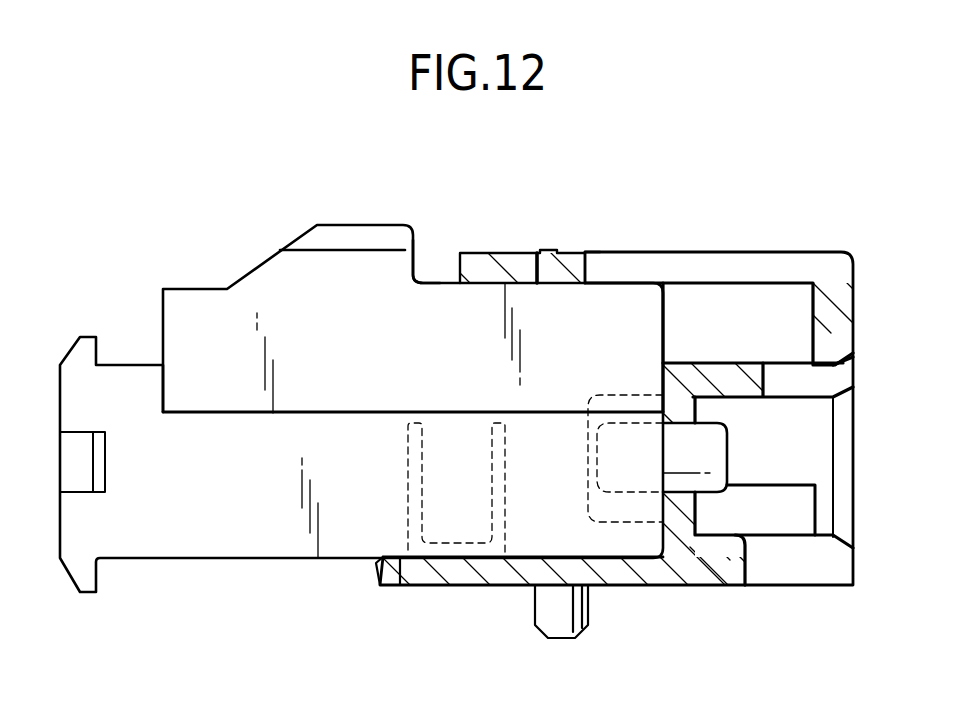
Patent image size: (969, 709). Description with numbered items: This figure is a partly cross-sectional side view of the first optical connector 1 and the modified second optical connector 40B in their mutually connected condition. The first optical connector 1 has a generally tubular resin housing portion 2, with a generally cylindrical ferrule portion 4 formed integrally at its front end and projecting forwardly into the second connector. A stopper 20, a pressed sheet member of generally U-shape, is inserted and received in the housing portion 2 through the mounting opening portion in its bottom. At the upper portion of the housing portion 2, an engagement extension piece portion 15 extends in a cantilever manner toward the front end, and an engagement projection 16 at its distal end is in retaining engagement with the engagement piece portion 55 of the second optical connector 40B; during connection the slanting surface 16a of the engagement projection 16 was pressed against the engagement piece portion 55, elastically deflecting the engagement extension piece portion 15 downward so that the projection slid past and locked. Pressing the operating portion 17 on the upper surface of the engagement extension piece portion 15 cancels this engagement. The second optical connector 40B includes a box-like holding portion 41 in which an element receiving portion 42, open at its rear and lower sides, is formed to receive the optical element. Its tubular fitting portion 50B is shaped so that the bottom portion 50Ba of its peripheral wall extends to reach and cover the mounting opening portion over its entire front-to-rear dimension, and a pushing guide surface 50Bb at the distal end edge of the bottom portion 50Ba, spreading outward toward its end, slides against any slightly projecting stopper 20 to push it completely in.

The first optical connector 1 is at (302, 193).
The housing portion 2 is at (205, 543).
The ferrule portion 4 is at (727, 460).
The engagement extension piece portion 15 is at (440, 283).
The engagement projection 16 is at (550, 253).
The slanting surface 16a is at (583, 253).
The operating portion 17 is at (357, 225).
The stopper 20 is at (478, 545).
The second optical connector 40B is at (741, 193).
The holding portion 41 is at (716, 363).
The element receiving portion 42 is at (783, 433).
The tubular fitting portion 50B is at (517, 588).
The bottom portion 50Ba is at (395, 588).
The pushing guide surface 50Bb is at (377, 563).
The engagement piece portion 55 is at (483, 253).